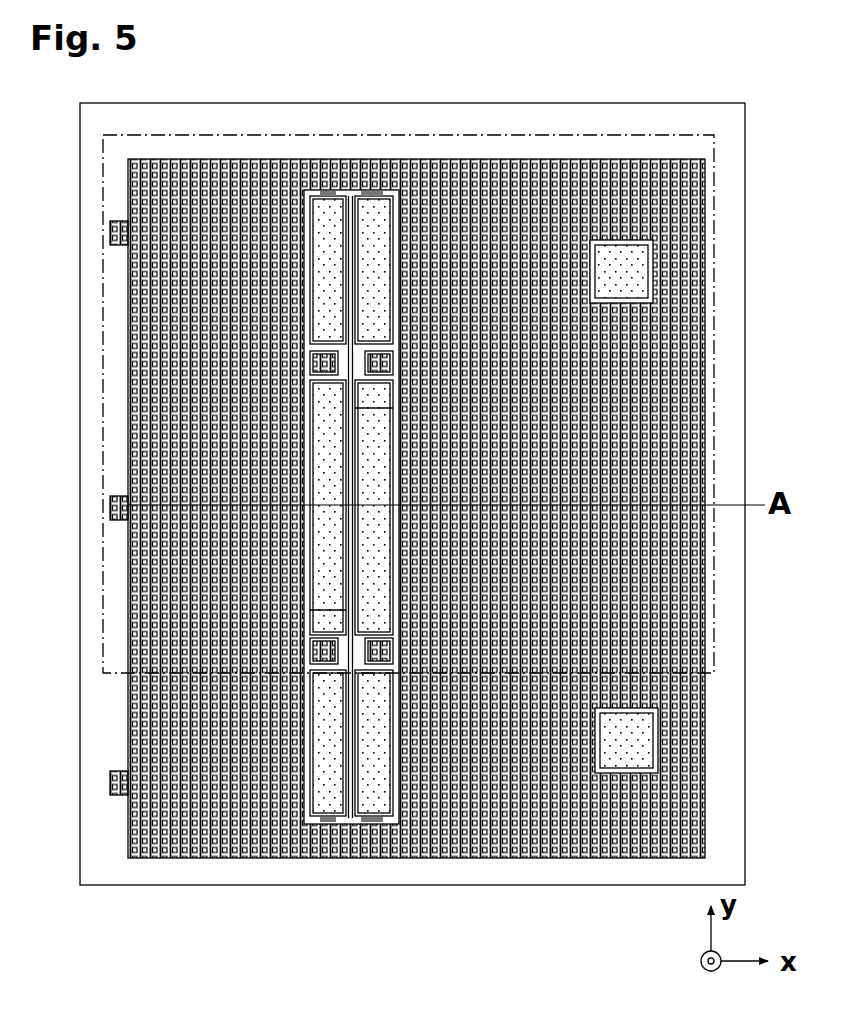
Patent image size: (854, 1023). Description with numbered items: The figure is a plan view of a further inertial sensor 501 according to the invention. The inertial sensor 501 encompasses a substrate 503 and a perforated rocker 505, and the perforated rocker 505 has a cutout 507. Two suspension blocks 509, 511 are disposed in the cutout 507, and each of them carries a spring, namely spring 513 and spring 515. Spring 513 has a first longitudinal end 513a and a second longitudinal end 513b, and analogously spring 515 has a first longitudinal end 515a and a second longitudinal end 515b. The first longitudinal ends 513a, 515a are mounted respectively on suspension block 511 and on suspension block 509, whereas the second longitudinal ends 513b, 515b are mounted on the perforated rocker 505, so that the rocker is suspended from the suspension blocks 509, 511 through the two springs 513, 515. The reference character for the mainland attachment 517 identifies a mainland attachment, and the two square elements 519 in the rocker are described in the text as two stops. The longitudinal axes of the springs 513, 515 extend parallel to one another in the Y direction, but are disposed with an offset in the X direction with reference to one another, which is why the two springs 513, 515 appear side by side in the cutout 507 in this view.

The inertial sensor 501 is at (633, 82).
The substrate 503 is at (160, 868).
The perforated rocker 505 is at (155, 362).
The cutout 507 is at (386, 194).
The suspension block 509 is at (316, 207).
The suspension block 511 is at (351, 194).
The spring 513 is at (352, 767).
The first longitudinal end 513a is at (365, 394).
The second longitudinal end 513b is at (368, 812).
The spring 515 is at (338, 455).
The first longitudinal end 515a is at (336, 601).
The second longitudinal end 515b is at (336, 189).
The mainland attachment 517 is at (367, 216).
The stop / anchor pad 519 is at (605, 268).